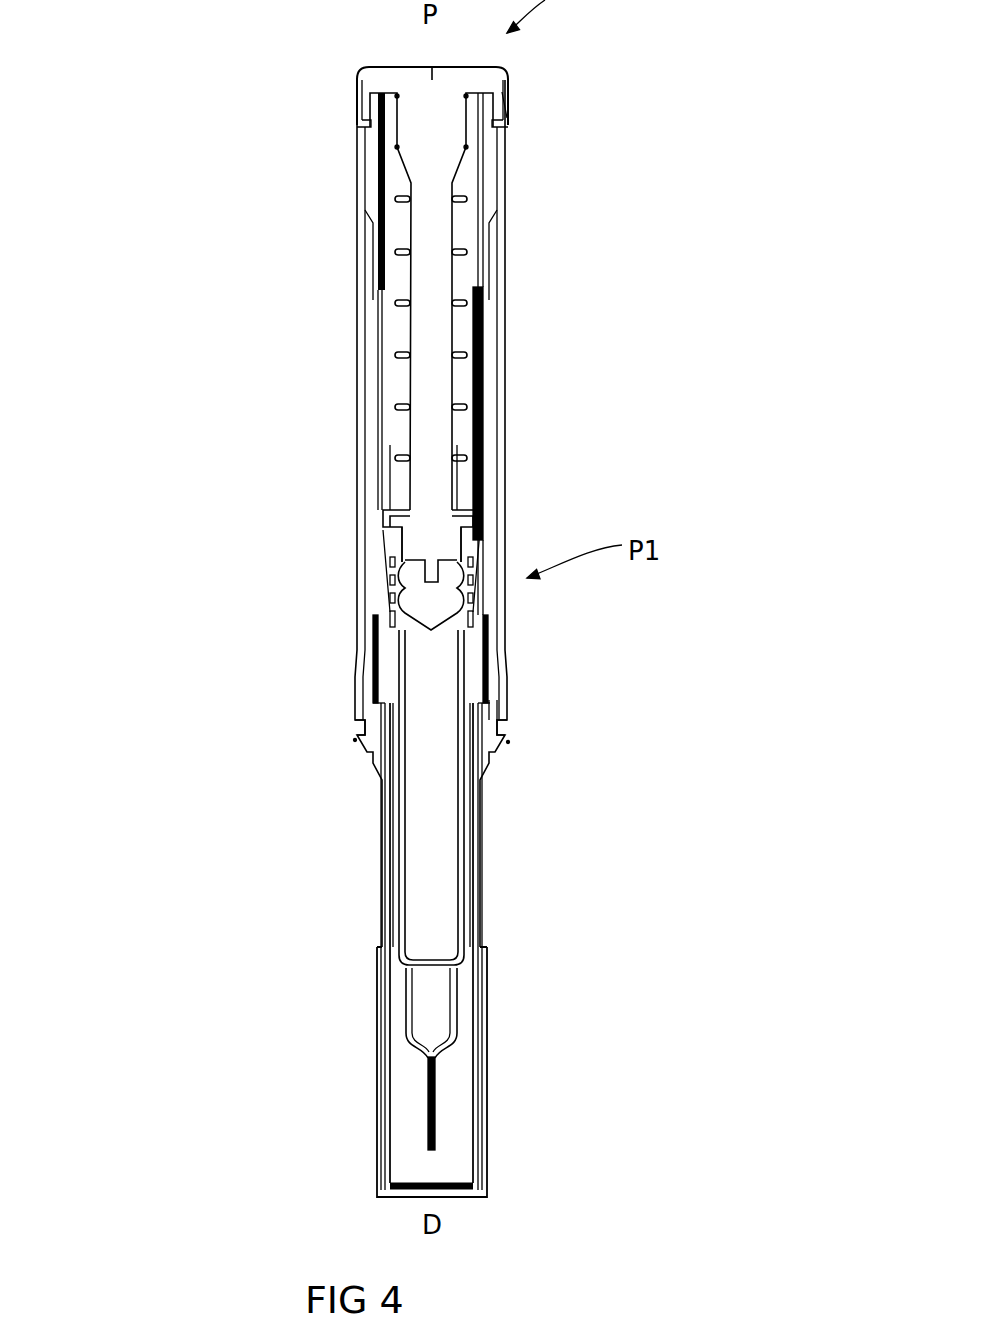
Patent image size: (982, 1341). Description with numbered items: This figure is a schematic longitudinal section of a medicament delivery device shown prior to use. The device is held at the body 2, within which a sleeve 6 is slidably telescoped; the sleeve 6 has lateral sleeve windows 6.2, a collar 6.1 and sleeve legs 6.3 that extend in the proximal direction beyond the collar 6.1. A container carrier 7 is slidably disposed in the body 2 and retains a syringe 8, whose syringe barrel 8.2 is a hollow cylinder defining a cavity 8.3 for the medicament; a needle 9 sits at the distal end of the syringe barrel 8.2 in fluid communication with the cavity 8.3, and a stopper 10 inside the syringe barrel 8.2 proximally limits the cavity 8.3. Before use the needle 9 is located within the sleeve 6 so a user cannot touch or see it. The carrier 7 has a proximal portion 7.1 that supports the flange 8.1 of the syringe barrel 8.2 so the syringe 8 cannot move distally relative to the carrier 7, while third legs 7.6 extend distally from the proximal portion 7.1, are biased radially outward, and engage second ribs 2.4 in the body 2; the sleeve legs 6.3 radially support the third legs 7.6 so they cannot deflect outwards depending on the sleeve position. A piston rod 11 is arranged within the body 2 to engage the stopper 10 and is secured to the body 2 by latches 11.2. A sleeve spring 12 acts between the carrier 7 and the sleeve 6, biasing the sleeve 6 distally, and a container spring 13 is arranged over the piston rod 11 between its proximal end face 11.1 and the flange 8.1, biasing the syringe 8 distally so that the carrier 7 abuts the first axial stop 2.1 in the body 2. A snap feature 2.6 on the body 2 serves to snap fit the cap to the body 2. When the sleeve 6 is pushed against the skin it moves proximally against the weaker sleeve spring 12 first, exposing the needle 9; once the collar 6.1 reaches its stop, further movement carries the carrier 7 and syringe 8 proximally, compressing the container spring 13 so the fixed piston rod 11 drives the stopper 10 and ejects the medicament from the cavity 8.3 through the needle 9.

The body 2 is at (507, 252).
The first axial stop 2.1 is at (510, 745).
The second rib 2.4 is at (478, 312).
The snap feature 2.6 is at (357, 720).
The sleeve 6 is at (383, 1083).
The collar 6.1 is at (490, 705).
The sleeve window 6.2 is at (482, 835).
The sleeve leg 6.3 is at (374, 650).
The container carrier 7 is at (385, 517).
The proximal portion 7.1 is at (385, 517).
The third leg 7.6 is at (396, 578).
The syringe 8 is at (402, 918).
The flange 8.1 is at (480, 515).
The syringe barrel 8.2 is at (402, 918).
The cavity 8.3 is at (440, 903).
The needle 9 is at (435, 1105).
The stopper 10 is at (405, 613).
The piston rod 11 is at (420, 322).
The proximal end face 11.1 is at (356, 74).
The latch 11.2 is at (510, 118).
The sleeve spring 12 is at (484, 635).
The container spring 13 is at (382, 255).